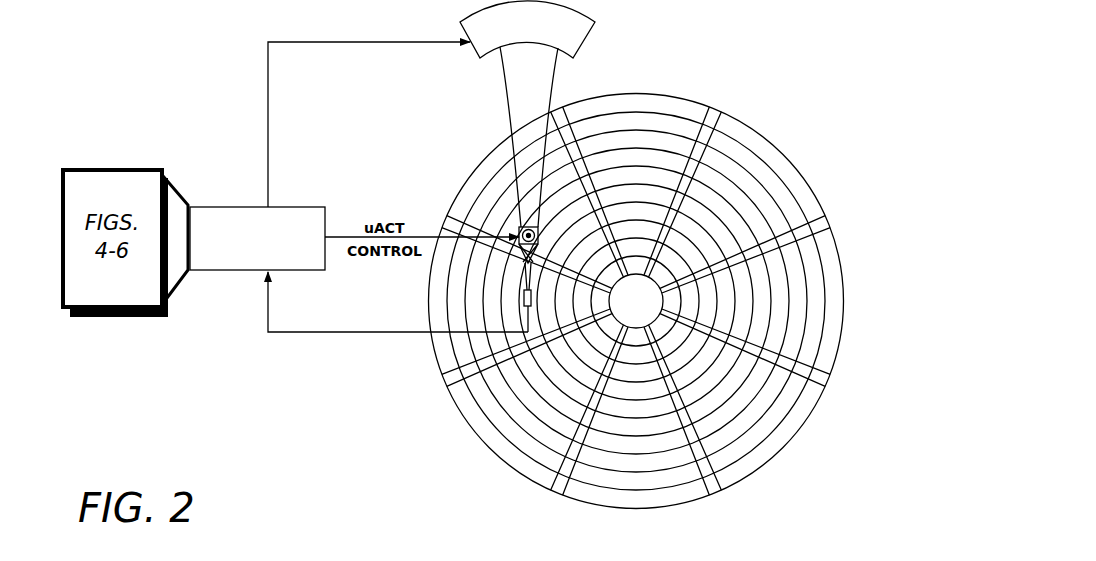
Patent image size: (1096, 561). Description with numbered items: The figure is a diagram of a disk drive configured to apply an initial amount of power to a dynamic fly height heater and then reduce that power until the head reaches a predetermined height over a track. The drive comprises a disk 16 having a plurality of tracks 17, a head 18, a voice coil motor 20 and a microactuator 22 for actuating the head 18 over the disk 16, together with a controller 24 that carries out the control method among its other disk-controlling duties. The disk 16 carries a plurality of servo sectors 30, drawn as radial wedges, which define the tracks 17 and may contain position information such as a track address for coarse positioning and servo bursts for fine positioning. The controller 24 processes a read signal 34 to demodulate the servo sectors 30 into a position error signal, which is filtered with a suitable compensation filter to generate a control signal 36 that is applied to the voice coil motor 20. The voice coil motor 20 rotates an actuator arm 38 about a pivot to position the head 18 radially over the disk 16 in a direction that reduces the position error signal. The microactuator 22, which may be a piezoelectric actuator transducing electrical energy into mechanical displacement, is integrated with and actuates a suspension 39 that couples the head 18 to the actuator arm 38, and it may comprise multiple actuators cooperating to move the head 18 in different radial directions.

The disk 16 is at (474, 446).
The tracks 17 is at (637, 120).
The head 18 is at (521, 302).
The voice coil motor 20 is at (474, 50).
The microactuator 22 is at (541, 236).
The controller 24 is at (243, 207).
The servo sectors 30 is at (720, 117).
The read signal 34 is at (330, 333).
The control signal 36 is at (268, 120).
The actuator arm 38 is at (513, 127).
The suspension 39 is at (521, 277).